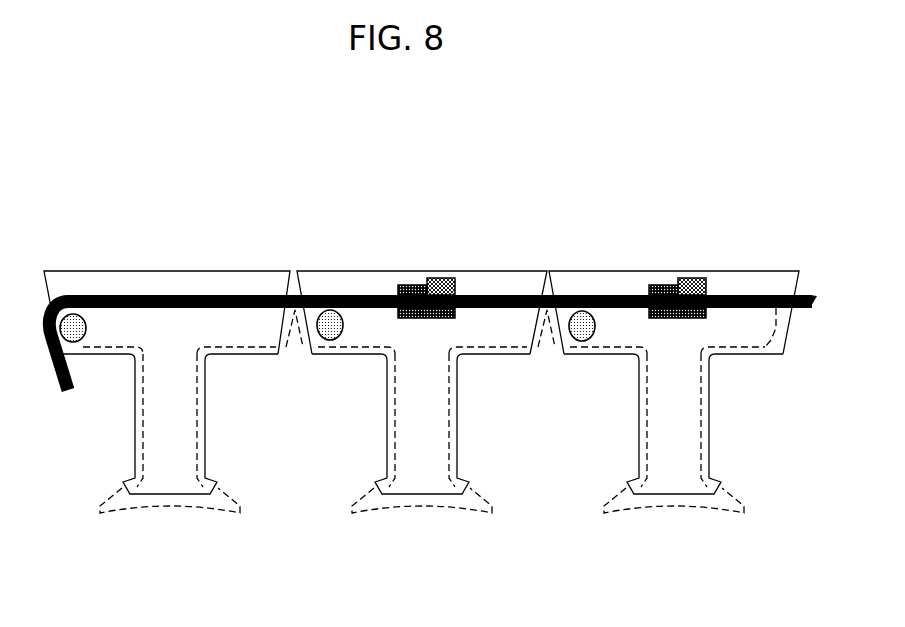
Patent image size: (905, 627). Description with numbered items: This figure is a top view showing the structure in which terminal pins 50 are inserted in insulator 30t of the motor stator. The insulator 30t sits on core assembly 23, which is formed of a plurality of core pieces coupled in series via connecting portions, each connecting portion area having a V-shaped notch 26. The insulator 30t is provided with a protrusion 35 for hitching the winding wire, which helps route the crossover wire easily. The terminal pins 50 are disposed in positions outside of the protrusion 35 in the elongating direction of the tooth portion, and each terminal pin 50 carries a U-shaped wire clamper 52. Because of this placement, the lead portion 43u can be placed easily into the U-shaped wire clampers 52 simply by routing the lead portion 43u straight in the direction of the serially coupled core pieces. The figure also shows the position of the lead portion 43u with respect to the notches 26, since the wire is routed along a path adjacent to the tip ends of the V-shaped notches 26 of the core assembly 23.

The core assembly 23 is at (742, 511).
The V-shaped notch 26 is at (294, 343).
The insulator 30t is at (785, 285).
The protrusion 35 is at (78, 341).
The lead portion 43u is at (50, 352).
The terminal pin 50 is at (407, 285).
The U-shaped wire clamper 52 is at (437, 279).